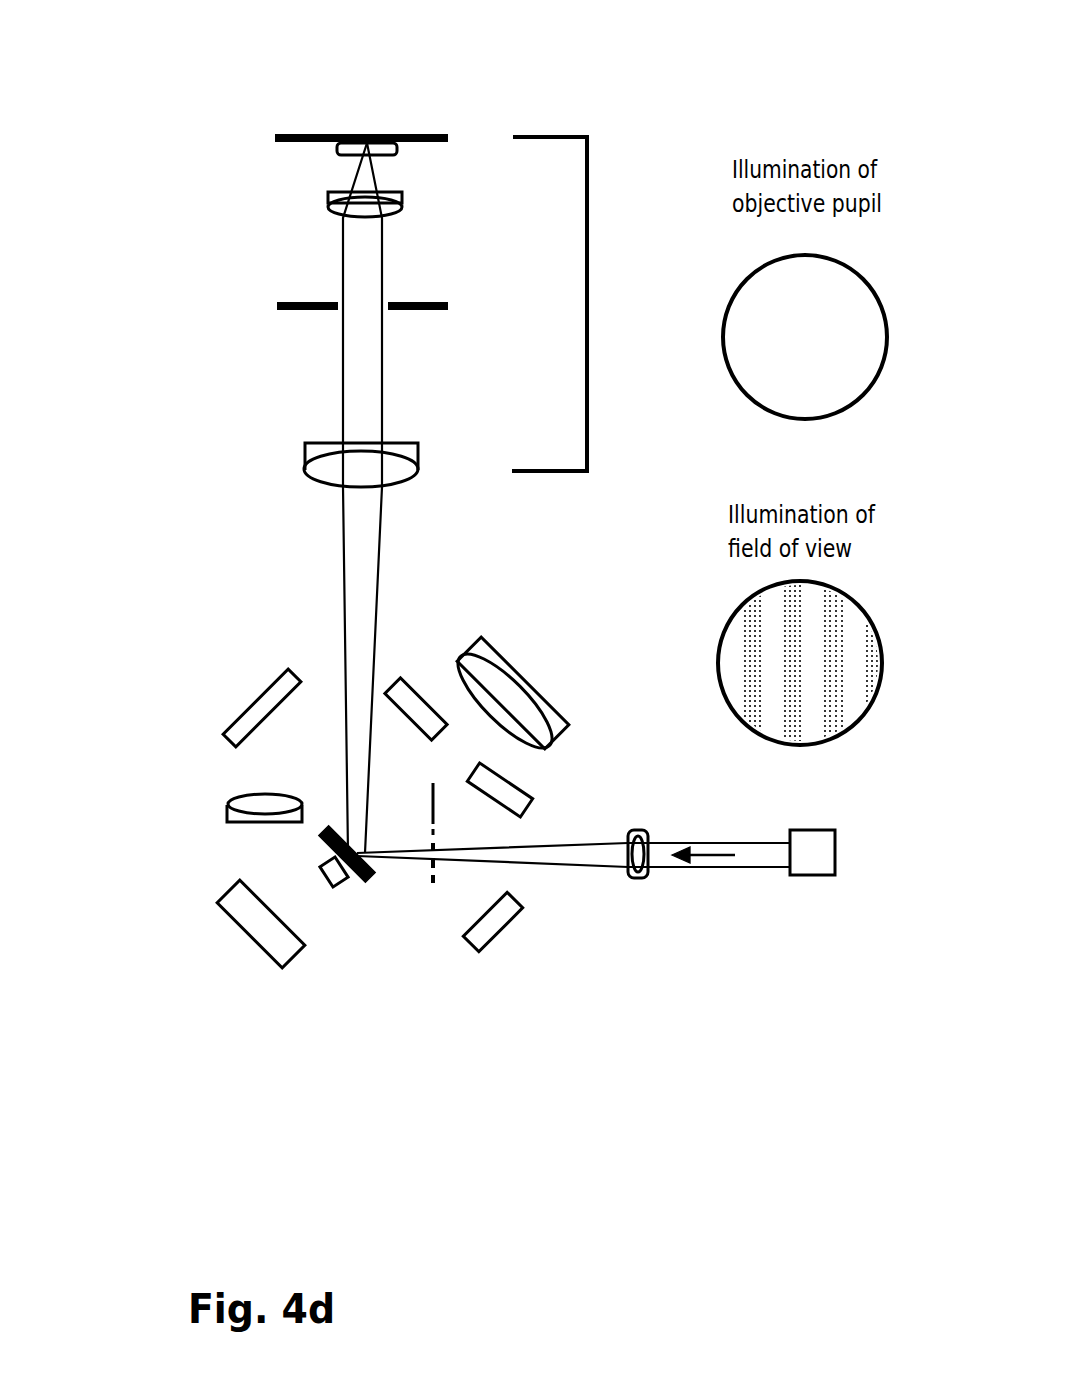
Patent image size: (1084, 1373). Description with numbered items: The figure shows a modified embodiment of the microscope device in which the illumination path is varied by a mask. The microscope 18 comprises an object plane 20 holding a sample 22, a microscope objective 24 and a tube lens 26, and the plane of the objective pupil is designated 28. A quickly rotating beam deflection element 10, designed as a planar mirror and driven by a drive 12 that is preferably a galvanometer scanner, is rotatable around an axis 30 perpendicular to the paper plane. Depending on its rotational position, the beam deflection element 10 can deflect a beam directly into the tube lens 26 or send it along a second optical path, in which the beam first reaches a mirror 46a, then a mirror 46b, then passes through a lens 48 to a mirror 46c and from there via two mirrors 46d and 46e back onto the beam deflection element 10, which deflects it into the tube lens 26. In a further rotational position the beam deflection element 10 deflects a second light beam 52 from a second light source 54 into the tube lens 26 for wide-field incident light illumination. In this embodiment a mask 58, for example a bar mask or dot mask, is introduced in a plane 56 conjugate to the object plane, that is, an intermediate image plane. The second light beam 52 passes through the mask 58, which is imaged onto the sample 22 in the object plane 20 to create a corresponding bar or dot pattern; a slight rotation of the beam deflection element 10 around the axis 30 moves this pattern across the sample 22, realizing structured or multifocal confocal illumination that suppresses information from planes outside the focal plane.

The beam deflection element 10 is at (372, 888).
The drive 12 is at (317, 870).
The microscope 18 is at (587, 252).
The object plane 20 is at (423, 133).
The sample 22 is at (350, 143).
The microscope objective 24 is at (327, 207).
The tube lens 26 is at (323, 473).
The plane of the objective pupil 28 is at (307, 310).
The axis 30 is at (355, 893).
The mirror 46a is at (413, 695).
The mirror 46b is at (260, 695).
The mirror 46c is at (240, 923).
The mirror 46d is at (500, 933).
The mirror 46e is at (507, 790).
The lens 48 is at (227, 805).
The second light beam 52 is at (760, 857).
The second light source 54 is at (813, 847).
The plane conjugate to the object plane 56 is at (433, 802).
The mask 58 is at (427, 883).